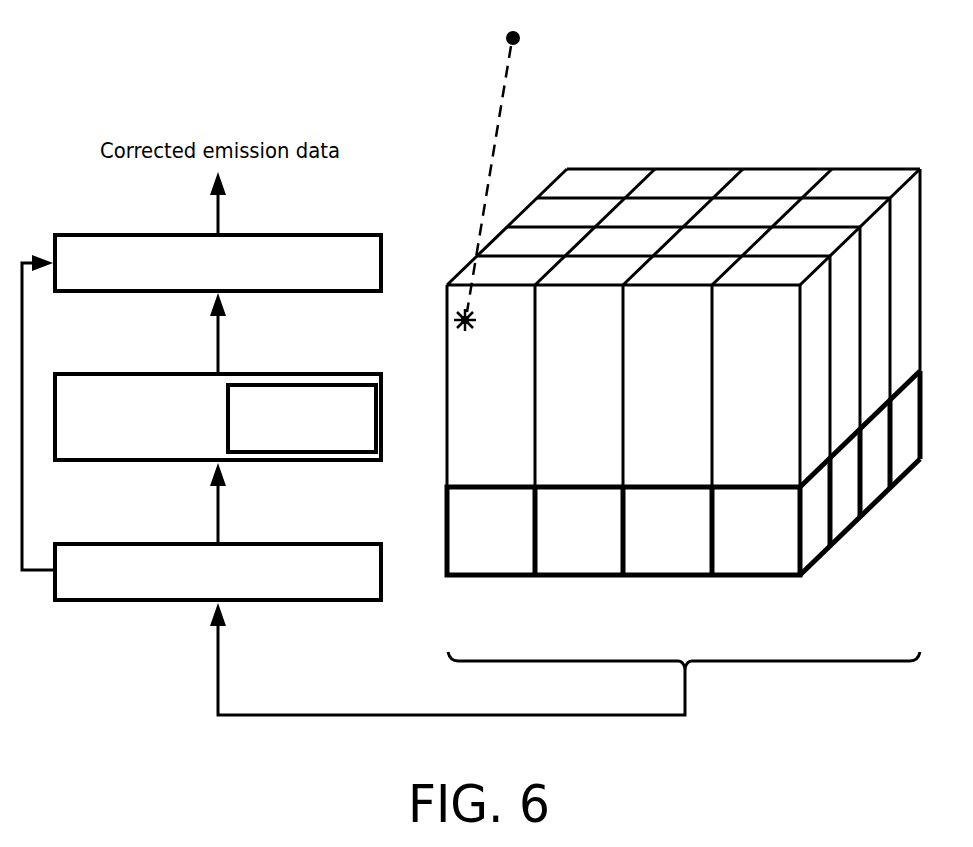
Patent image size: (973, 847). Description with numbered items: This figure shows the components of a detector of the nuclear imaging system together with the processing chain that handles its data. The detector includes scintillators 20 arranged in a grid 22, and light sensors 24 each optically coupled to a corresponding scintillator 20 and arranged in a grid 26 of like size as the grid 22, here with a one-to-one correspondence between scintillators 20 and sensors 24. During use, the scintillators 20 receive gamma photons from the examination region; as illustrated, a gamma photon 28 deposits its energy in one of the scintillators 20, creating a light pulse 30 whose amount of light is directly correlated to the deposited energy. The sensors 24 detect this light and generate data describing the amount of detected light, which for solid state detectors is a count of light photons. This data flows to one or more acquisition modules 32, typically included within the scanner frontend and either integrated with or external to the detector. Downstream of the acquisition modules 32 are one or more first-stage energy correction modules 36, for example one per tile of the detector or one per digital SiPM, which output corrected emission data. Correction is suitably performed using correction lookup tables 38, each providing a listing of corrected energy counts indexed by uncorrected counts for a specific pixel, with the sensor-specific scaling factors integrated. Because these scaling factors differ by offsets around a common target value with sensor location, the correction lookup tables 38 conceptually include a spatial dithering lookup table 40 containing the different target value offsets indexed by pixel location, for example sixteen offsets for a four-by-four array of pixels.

The scintillator 20 is at (803, 168).
The grid 22 is at (683, 338).
The light sensor 24 is at (487, 565).
The grid 26 is at (868, 568).
The gamma photon 28 is at (505, 40).
The light pulse 30 is at (455, 318).
The acquisition module 32 is at (88, 542).
The first-stage energy correction module 36 is at (88, 233).
The correction lookup table 38 is at (88, 372).
The spatial dithering lookup table 40 is at (297, 384).